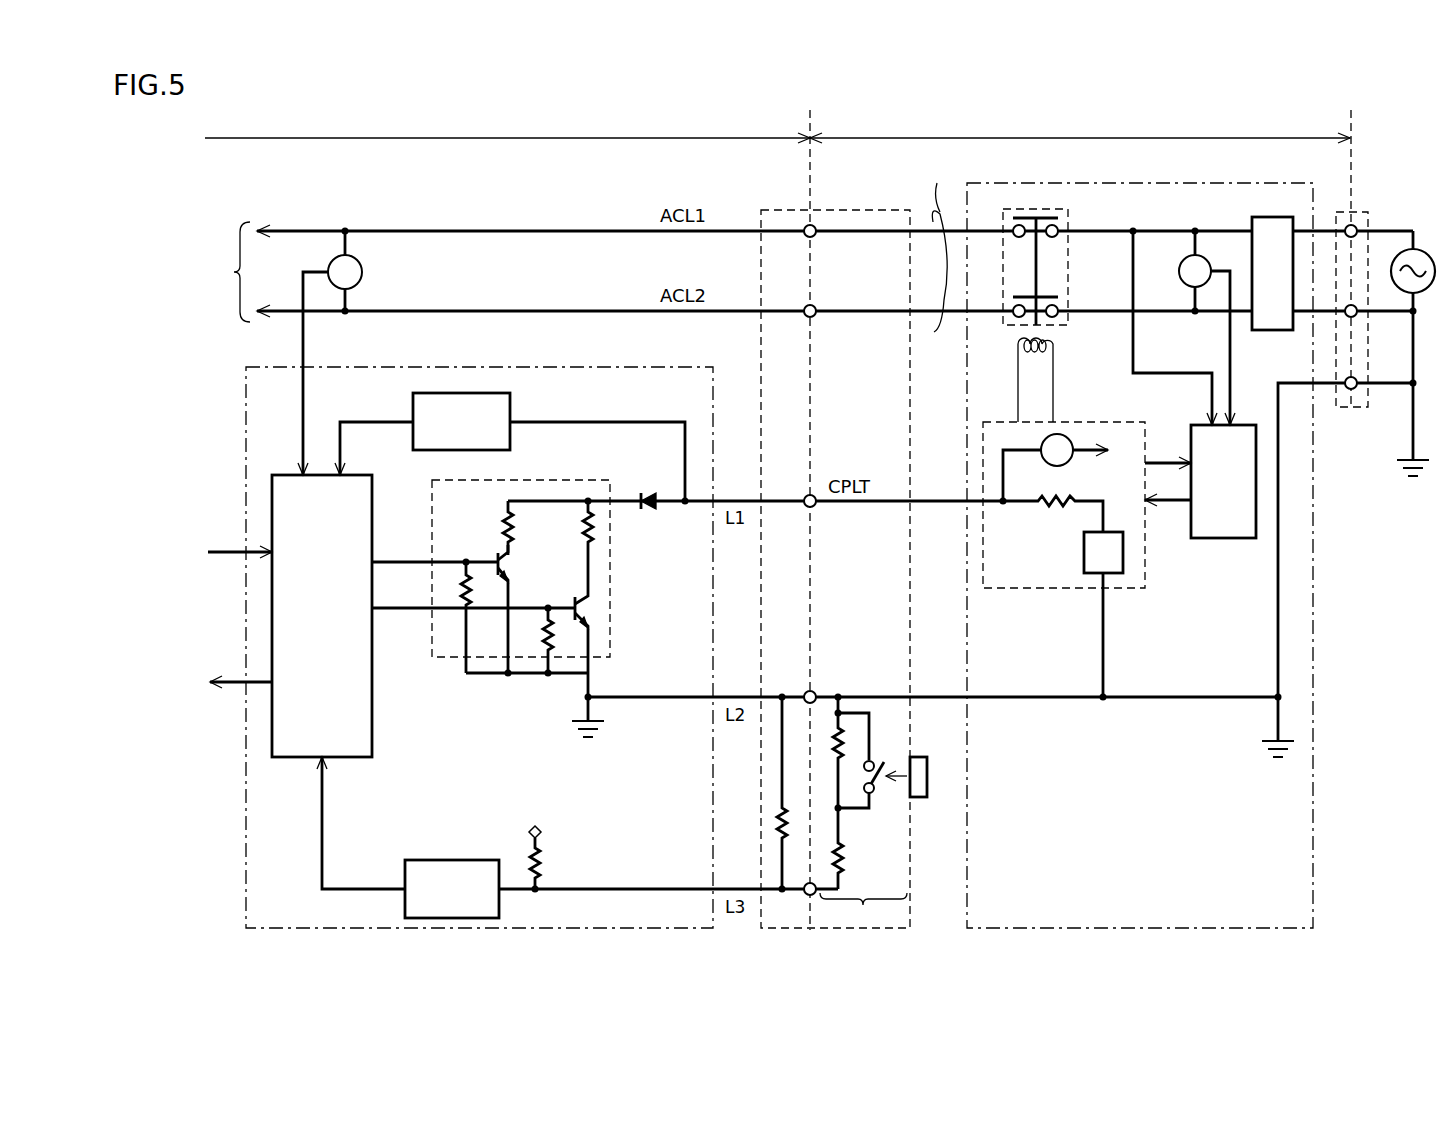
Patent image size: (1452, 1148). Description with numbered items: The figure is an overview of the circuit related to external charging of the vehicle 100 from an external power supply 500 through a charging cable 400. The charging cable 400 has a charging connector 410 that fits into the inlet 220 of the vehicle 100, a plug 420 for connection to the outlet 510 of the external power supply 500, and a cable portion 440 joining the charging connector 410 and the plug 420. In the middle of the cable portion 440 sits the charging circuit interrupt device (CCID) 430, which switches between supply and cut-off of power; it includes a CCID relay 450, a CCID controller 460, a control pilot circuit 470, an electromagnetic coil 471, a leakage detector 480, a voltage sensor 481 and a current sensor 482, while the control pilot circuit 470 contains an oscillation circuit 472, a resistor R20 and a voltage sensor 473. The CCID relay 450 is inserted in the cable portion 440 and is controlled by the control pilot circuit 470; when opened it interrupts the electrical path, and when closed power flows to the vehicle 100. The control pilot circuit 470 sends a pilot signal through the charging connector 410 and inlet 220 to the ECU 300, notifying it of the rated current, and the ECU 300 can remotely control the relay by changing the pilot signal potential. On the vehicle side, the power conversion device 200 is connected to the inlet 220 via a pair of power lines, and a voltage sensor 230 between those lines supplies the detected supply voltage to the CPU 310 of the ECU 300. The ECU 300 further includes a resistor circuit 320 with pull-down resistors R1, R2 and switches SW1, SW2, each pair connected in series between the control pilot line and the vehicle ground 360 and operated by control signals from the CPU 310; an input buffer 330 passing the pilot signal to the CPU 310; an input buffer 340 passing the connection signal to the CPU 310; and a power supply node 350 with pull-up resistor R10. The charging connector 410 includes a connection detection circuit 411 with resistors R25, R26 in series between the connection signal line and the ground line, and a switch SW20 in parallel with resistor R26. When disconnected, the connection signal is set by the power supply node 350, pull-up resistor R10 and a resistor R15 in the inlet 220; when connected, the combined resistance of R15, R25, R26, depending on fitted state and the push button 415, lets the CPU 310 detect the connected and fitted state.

The vehicle 100 is at (507, 126).
The charging cable 400 is at (1080, 519).
The power conversion device 200 is at (207, 272).
The voltage sensor 230 is at (363, 262).
The inlet 220 is at (785, 210).
The charging connector 410 is at (837, 544).
The cable portion 440 is at (940, 245).
The charging circuit interrupt device (CCID) 430 is at (1225, 183).
The plug 420 is at (1340, 212).
The outlet 510 is at (1364, 212).
The external power supply 500 is at (1432, 247).
The CCID relay 450 is at (1057, 209).
The current sensor 482 is at (1137, 262).
The voltage sensor 481 is at (1181, 286).
The leakage detector 480 is at (1273, 332).
The electromagnetic coil 471 is at (1056, 362).
The control pilot circuit 470 is at (1064, 547).
The voltage sensor 473 is at (1065, 463).
The oscillation circuit 472 is at (1082, 562).
The CCID controller 460 is at (1222, 540).
The ECU 300 is at (637, 367).
The input buffer 330 is at (460, 393).
The resistor circuit 320 is at (687, 574).
The CPU 310 is at (345, 758).
The input buffer 340 is at (450, 860).
The power supply node 350 is at (535, 825).
The vehicle ground 360 is at (572, 713).
The push button 415 is at (918, 757).
The connection detection circuit 411 is at (863, 911).
The pull-down resistor R1 is at (500, 524).
The pull-down resistor R2 is at (580, 524).
The switch SW1 is at (512, 563).
The switch SW2 is at (590, 610).
The pull-up resistor R10 is at (545, 868).
The resistor R15 is at (780, 832).
The resistor R20 is at (1043, 508).
The resistor R25 is at (843, 858).
The resistor R26 is at (846, 715).
The switch SW20 is at (878, 798).